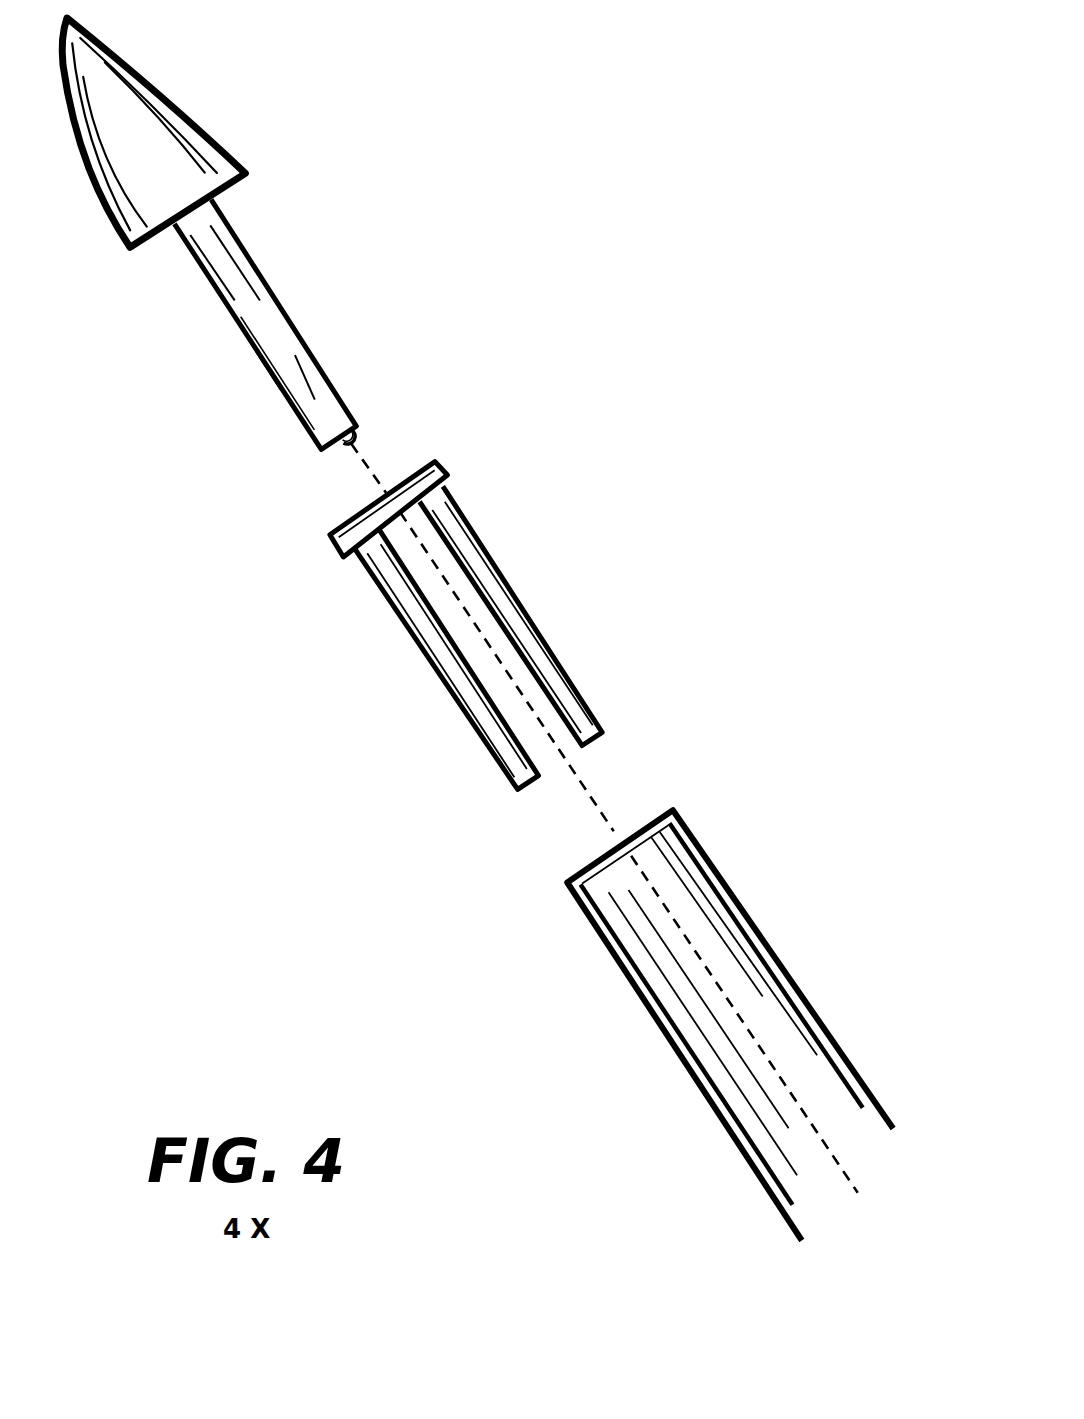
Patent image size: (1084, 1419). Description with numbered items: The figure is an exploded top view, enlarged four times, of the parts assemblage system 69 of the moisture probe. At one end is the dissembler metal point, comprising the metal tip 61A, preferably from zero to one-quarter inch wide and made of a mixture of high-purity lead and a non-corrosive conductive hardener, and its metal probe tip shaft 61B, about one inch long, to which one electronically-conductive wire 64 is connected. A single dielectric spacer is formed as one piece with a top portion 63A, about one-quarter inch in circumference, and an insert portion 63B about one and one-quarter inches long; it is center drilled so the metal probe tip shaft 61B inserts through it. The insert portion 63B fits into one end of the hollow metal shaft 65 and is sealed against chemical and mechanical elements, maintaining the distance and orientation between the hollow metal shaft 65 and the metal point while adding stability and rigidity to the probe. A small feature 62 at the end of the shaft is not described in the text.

The metal tip 61A is at (157, 133).
The metal probe tip shaft 61B is at (258, 315).
The detent bump 62 is at (358, 425).
The dielectric spacer 63A is at (450, 477).
The insert portion of the spacer 63B is at (450, 642).
The electronically-conductive wire 64 is at (594, 801).
The hollow metal shaft 65 is at (653, 1022).
The parts assemblage system 69 is at (433, 23).